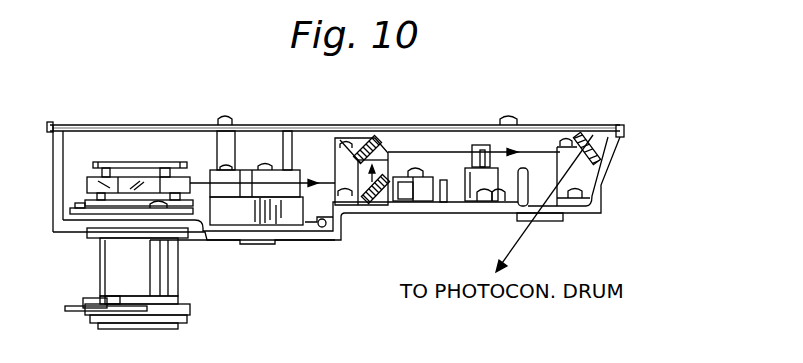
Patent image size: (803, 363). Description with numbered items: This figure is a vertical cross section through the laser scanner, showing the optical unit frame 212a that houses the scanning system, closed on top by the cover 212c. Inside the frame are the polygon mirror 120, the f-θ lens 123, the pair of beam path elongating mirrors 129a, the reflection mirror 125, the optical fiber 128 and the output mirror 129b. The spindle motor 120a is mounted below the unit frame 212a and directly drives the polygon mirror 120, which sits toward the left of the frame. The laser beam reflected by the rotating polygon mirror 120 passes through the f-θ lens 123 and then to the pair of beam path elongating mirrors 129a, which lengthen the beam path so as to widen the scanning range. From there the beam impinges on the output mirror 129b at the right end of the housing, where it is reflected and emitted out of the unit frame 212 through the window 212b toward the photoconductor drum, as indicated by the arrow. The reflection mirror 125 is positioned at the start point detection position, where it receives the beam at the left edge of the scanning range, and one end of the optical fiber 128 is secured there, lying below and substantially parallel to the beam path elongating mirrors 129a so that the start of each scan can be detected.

The polygon mirror 120 is at (87, 176).
The spindle motor 120a is at (105, 270).
The unit frame 212 is at (606, 213).
The optical unit frame 212a is at (235, 240).
The window 212b is at (556, 221).
The cover 212c is at (150, 125).
The f-θ lens 123 is at (283, 170).
The reflection mirror 125 is at (473, 172).
The optical fiber 128 is at (323, 228).
The beam path elongating mirrors 129a is at (373, 198).
The output mirror 129b is at (592, 133).